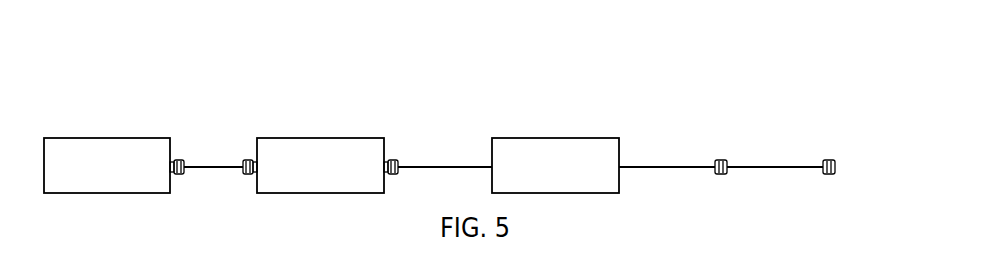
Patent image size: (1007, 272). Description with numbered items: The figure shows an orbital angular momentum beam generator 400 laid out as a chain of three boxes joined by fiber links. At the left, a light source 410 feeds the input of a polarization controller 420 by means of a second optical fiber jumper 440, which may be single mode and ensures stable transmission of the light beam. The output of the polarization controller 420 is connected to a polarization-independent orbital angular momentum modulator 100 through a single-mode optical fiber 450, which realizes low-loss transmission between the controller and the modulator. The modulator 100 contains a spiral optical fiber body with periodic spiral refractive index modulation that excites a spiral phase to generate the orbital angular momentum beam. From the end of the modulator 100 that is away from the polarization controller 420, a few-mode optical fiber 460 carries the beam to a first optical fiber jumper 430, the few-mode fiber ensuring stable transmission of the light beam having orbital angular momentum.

The orbital angular momentum beam generator 400 is at (510, 50).
The light source 410 is at (104, 168).
The second optical fiber jumper 440 is at (207, 160).
The polarization controller 420 is at (306, 163).
The single-mode optical fiber 450 is at (410, 160).
The polarization-independent orbital angular momentum modulator 100 is at (520, 163).
The few-mode optical fiber 460 is at (650, 160).
The first optical fiber jumper 430 is at (772, 160).